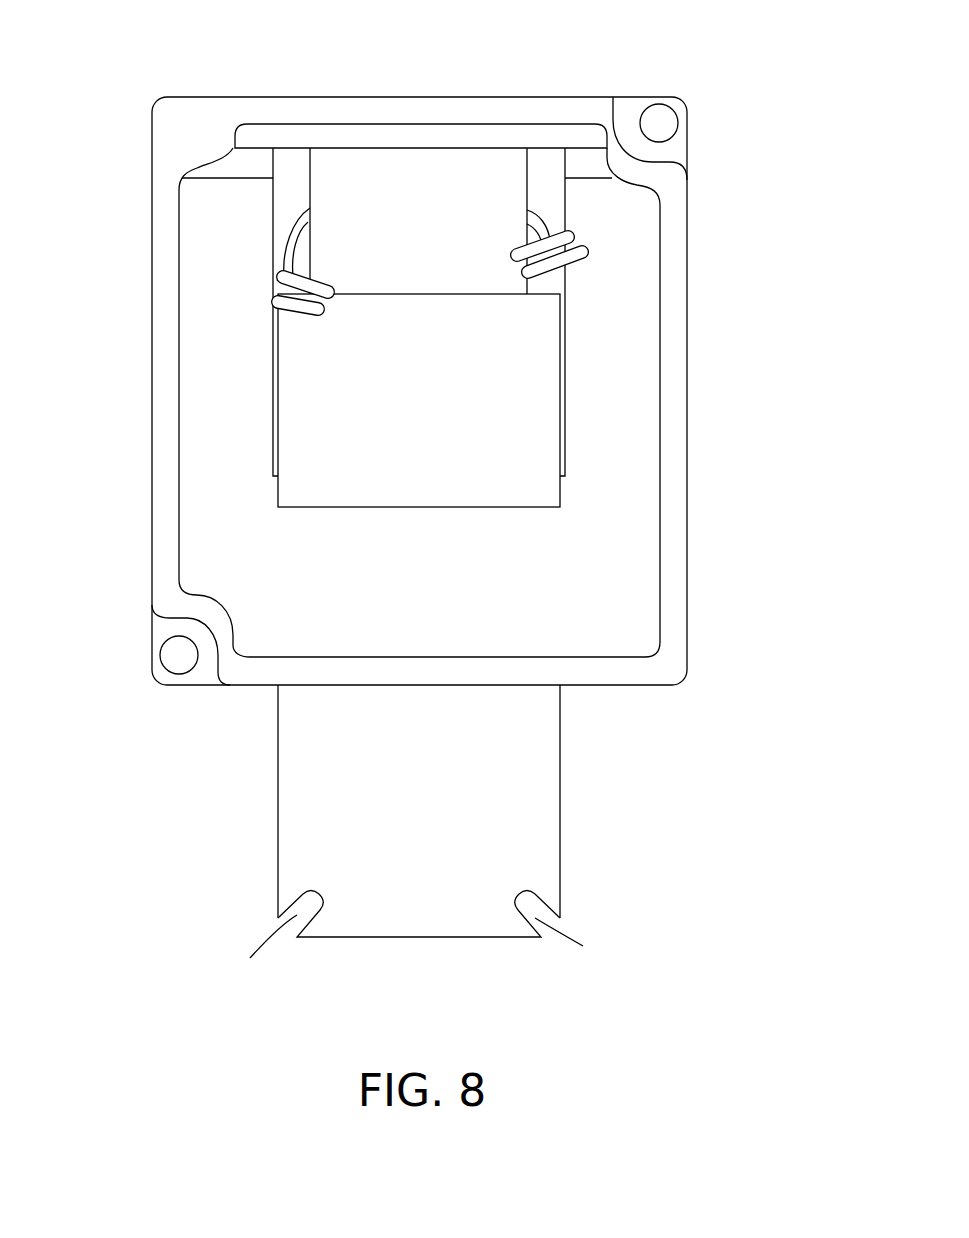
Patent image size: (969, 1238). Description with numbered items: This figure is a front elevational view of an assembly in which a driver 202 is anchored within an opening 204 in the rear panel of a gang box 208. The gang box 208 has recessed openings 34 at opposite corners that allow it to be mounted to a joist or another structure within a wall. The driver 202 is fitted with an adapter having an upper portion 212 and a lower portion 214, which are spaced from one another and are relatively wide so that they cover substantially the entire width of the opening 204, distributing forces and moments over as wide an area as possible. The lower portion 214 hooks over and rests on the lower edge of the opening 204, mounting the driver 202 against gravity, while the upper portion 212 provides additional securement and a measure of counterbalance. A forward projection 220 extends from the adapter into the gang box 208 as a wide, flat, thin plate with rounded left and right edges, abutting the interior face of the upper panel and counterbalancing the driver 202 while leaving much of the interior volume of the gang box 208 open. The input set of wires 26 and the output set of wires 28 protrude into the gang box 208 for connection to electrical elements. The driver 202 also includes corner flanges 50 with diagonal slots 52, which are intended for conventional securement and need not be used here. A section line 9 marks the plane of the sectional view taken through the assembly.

The section line 9 is at (560, 70).
The input set of wires 26 is at (262, 309).
The output set of wires 28 is at (598, 262).
The recessed openings 34 is at (656, 124).
The corner flanges 50 is at (283, 900).
The diagonal slots 52 is at (415, 945).
The driver 202 is at (572, 778).
The opening 204 is at (282, 200).
The gang box 208 is at (255, 90).
The upper portion 212 is at (488, 165).
The lower portion 214 is at (293, 438).
The forward projection 220 is at (349, 140).